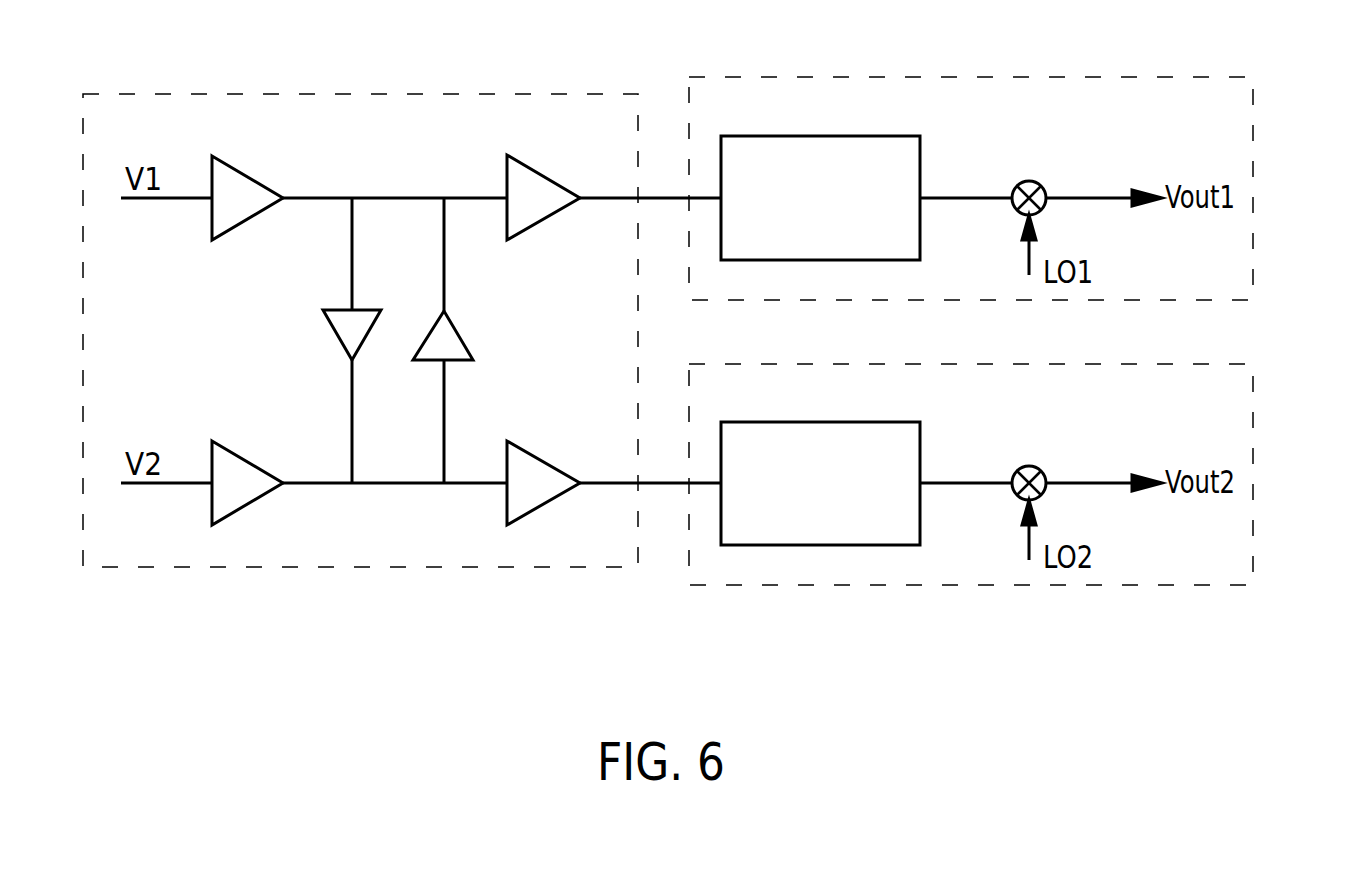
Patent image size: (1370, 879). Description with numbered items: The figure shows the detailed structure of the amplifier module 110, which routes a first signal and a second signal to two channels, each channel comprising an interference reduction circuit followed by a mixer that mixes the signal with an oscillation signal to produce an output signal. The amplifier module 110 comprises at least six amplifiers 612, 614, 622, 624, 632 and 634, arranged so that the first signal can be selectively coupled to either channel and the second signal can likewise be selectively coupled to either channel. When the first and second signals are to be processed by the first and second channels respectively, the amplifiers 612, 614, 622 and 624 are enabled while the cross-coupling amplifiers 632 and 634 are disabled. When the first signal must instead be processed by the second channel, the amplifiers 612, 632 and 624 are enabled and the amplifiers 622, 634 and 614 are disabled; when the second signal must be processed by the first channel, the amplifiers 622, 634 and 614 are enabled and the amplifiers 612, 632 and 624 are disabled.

The amplifier module 110 is at (410, 94).
The amplifier 612 is at (245, 172).
The amplifier 614 is at (540, 171).
The amplifier 622 is at (245, 457).
The amplifier 624 is at (540, 456).
The amplifier 632 is at (337, 337).
The amplifier 634 is at (460, 333).